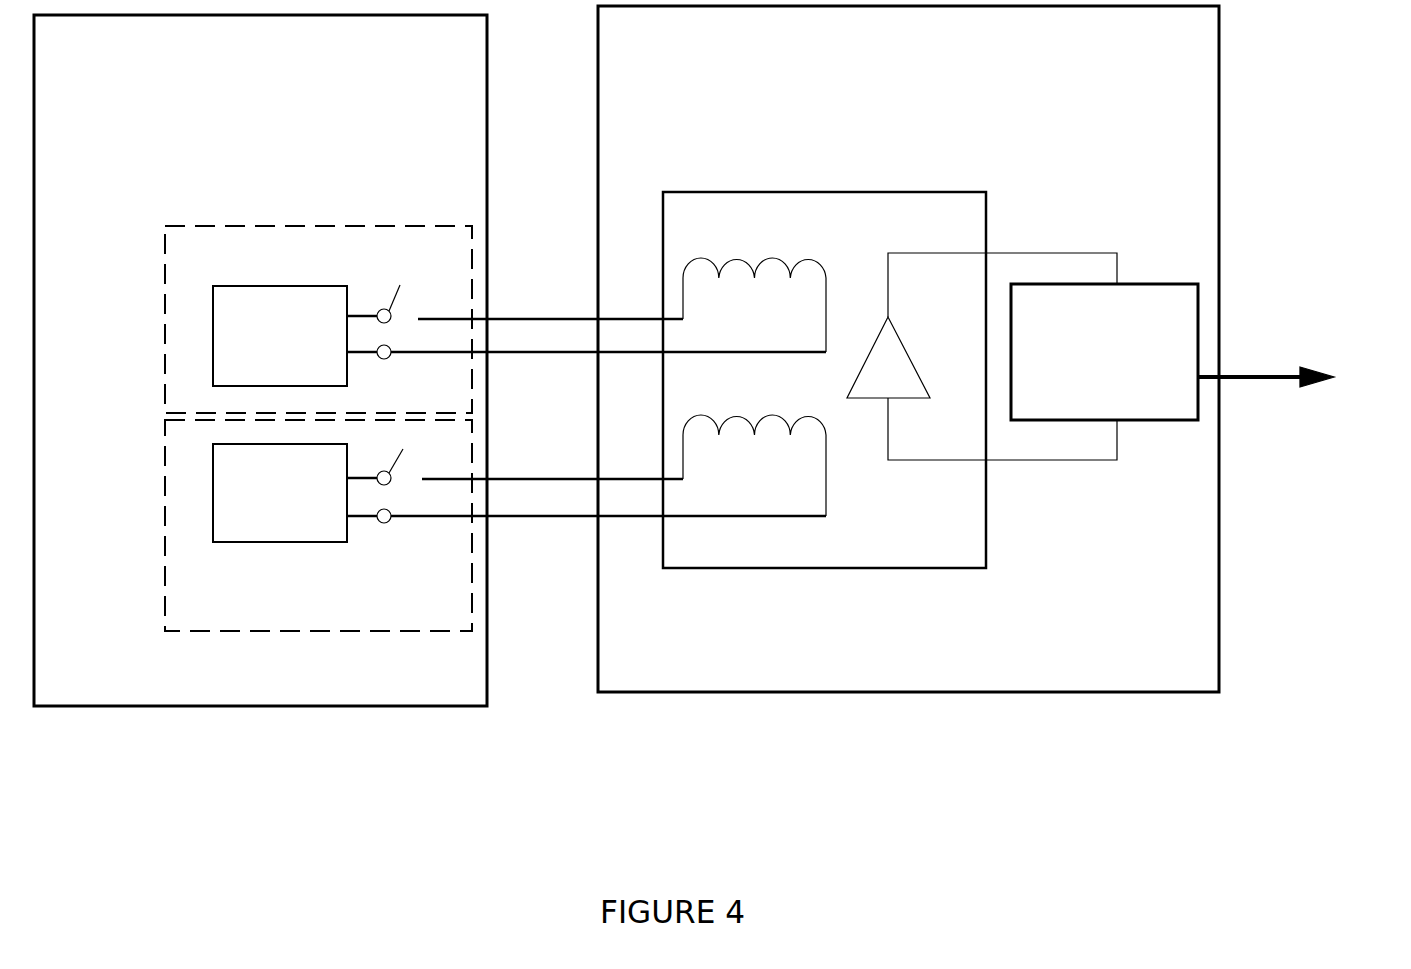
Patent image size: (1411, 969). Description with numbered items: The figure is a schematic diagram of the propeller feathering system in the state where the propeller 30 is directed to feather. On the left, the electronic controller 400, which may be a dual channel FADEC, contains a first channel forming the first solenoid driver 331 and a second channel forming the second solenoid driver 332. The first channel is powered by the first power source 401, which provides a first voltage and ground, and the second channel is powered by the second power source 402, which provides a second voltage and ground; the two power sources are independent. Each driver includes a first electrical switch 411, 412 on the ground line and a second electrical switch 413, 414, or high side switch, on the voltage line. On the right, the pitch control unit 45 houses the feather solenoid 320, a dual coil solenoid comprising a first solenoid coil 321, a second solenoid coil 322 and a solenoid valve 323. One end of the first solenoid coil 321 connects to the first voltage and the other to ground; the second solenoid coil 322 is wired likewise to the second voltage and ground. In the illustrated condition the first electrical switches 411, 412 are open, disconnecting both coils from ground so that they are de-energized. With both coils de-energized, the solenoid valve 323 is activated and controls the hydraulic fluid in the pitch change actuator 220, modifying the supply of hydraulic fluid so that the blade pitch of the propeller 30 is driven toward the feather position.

The electronic controller 400 is at (288, 115).
The pitch control unit (PCU) 45 is at (927, 104).
The first solenoid driver 331 is at (232, 263).
The second solenoid driver 332 is at (193, 562).
The first power source 401 is at (260, 307).
The second power source 402 is at (283, 513).
The first electrical switch 411 is at (397, 292).
The first electrical switch 412 is at (397, 458).
The second electrical switch 413 is at (407, 353).
The second electrical switch 414 is at (415, 518).
The feather solenoid 320 is at (858, 192).
The first solenoid coil 321 is at (700, 258).
The second solenoid coil 322 is at (683, 430).
The solenoid valve 323 is at (877, 367).
The pitch change actuator 220 is at (1133, 389).
The propeller 30 is at (1302, 335).